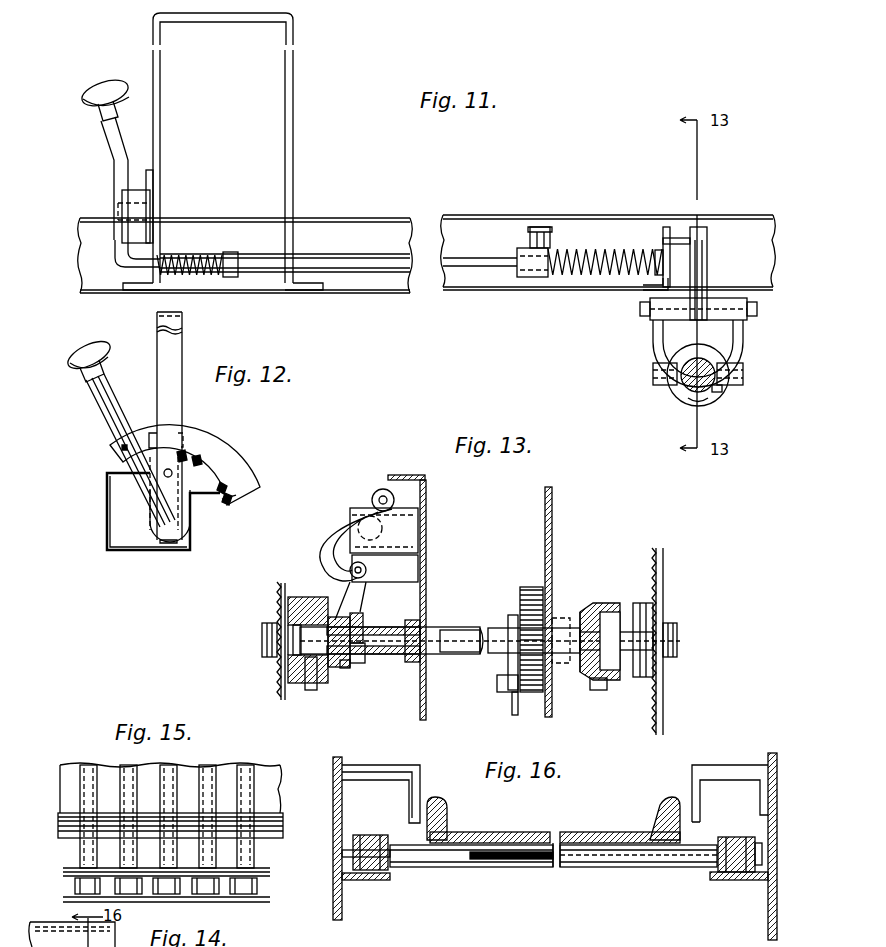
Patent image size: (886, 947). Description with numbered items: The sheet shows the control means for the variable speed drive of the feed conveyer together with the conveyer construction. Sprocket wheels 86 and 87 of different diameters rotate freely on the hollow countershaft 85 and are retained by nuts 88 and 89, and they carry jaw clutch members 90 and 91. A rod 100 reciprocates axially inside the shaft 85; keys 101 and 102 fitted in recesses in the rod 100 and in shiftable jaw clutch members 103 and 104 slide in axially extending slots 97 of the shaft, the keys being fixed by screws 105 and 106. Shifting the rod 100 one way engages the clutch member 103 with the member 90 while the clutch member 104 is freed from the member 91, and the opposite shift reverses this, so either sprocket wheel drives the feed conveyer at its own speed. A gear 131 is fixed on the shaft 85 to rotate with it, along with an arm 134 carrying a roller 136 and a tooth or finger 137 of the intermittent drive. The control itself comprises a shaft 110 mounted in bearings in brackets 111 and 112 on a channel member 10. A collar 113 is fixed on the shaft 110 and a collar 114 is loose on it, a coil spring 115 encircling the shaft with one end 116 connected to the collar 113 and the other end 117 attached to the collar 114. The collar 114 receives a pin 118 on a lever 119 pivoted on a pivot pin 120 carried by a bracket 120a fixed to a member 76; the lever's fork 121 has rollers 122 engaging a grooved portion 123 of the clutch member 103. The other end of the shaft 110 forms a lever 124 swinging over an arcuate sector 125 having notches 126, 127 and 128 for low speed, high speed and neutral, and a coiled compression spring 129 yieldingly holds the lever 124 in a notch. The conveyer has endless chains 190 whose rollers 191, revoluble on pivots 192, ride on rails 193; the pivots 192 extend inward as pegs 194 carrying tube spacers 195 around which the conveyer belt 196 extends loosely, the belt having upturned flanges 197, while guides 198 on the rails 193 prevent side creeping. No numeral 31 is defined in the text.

In FIG. 11, the channel member 10 is at (392, 282).
In FIG. 12, the channel member 10 is at (107, 506).
In FIG. 13, the channel member 10 is at (400, 475).
In FIG. 11, the post bracket 31 is at (293, 161).
In FIG. 12, the post bracket 31 is at (182, 345).
In FIG. 13, the member 76 is at (426, 708).
In FIG. 11, the countershaft 85 is at (726, 370).
In FIG. 13, the countershaft 85 is at (460, 630).
In FIG. 13, the sprocket wheel 86 is at (279, 600).
In FIG. 13, the sprocket wheel 87 is at (664, 565).
In FIG. 13, the nut 88 is at (263, 652).
In FIG. 13, the nut 89 is at (678, 628).
In FIG. 13, the jaw clutch member 90 is at (293, 683).
In FIG. 13, the jaw clutch member 91 is at (640, 677).
In FIG. 13, the axially extending slot 97 is at (412, 663).
In FIG. 11, the rod 100 is at (700, 358).
In FIG. 13, the rod 100 is at (403, 627).
In FIG. 11, the key 101 is at (696, 402).
In FIG. 13, the key 101 is at (342, 667).
In FIG. 13, the key 102 is at (585, 672).
In FIG. 13, the shiftable jaw clutch member 103 is at (298, 597).
In FIG. 13, the shiftable jaw clutch member 104 is at (605, 603).
In FIG. 13, the screw 105 is at (312, 690).
In FIG. 13, the screw 106 is at (600, 690).
In FIG. 11, the shaft 110 is at (358, 262).
In FIG. 13, the shaft 110 is at (382, 525).
In FIG. 11, the bracket 111 is at (186, 292).
In FIG. 12, the bracket 111 is at (189, 540).
In FIG. 11, the bracket 112 is at (650, 291).
In FIG. 13, the bracket 112 is at (418, 527).
In FIG. 11, the collar 113 is at (528, 250).
In FIG. 11, the collar 114 is at (666, 228).
In FIG. 13, the collar 114 is at (418, 516).
In FIG. 11, the coil spring 115 is at (596, 252).
In FIG. 11, the spring end 116 is at (547, 250).
In FIG. 11, the spring end 117 is at (660, 255).
In FIG. 11, the pin 118 is at (678, 237).
In FIG. 13, the pin 118 is at (376, 494).
In FIG. 11, the lever 119 is at (707, 233).
In FIG. 13, the lever 119 is at (345, 525).
In FIG. 11, the pivot pin 120 is at (748, 310).
In FIG. 13, the pivot pin 120 is at (350, 569).
In FIG. 13, the bracket 120a is at (415, 565).
In FIG. 11, the fork 121 is at (738, 338).
In FIG. 13, the fork 121 is at (364, 635).
In FIG. 11, the roller 122 is at (662, 386).
In FIG. 13, the roller 122 is at (364, 663).
In FIG. 11, the grooved portion 123 is at (719, 398).
In FIG. 13, the grooved portion 123 is at (354, 672).
In FIG. 11, the lever 124 is at (110, 144).
In FIG. 12, the lever 124 is at (108, 410).
In FIG. 11, the arcuate sector 125 is at (120, 212).
In FIG. 12, the arcuate sector 125 is at (212, 470).
In FIG. 12, the recess 126 is at (149, 440).
In FIG. 11, the notch 127 is at (122, 230).
In FIG. 12, the notch 127 is at (215, 501).
In FIG. 11, the notch 128 is at (120, 193).
In FIG. 12, the notch 128 is at (190, 456).
In FIG. 11, the coiled compression spring 129 is at (214, 256).
In FIG. 13, the gear 131 is at (528, 588).
In FIG. 13, the arm 134 is at (509, 670).
In FIG. 13, the roller 136 is at (506, 692).
In FIG. 13, the tooth or finger 137 is at (513, 712).
In FIG. 15, the endless chain 190 is at (283, 826).
In FIG. 16, the endless chain 190 is at (750, 837).
In FIG. 15, the roller 191 is at (232, 895).
In FIG. 16, the roller 191 is at (378, 825).
In FIG. 15, the pivot 192 is at (132, 903).
In FIG. 16, the pivot 192 is at (379, 870).
In FIG. 16, the rail 193 is at (370, 882).
In FIG. 16, the peg 194 is at (465, 867).
In FIG. 15, the tube spacer 195 is at (117, 843).
In FIG. 16, the tube spacer 195 is at (549, 869).
In FIG. 15, the conveyer belt 196 is at (258, 776).
In FIG. 16, the conveyer belt 196 is at (533, 832).
In FIG. 15, the upturned flange 197 is at (280, 840).
In FIG. 16, the upturned flange 197 is at (447, 806).
In FIG. 16, the guide 198 is at (421, 776).